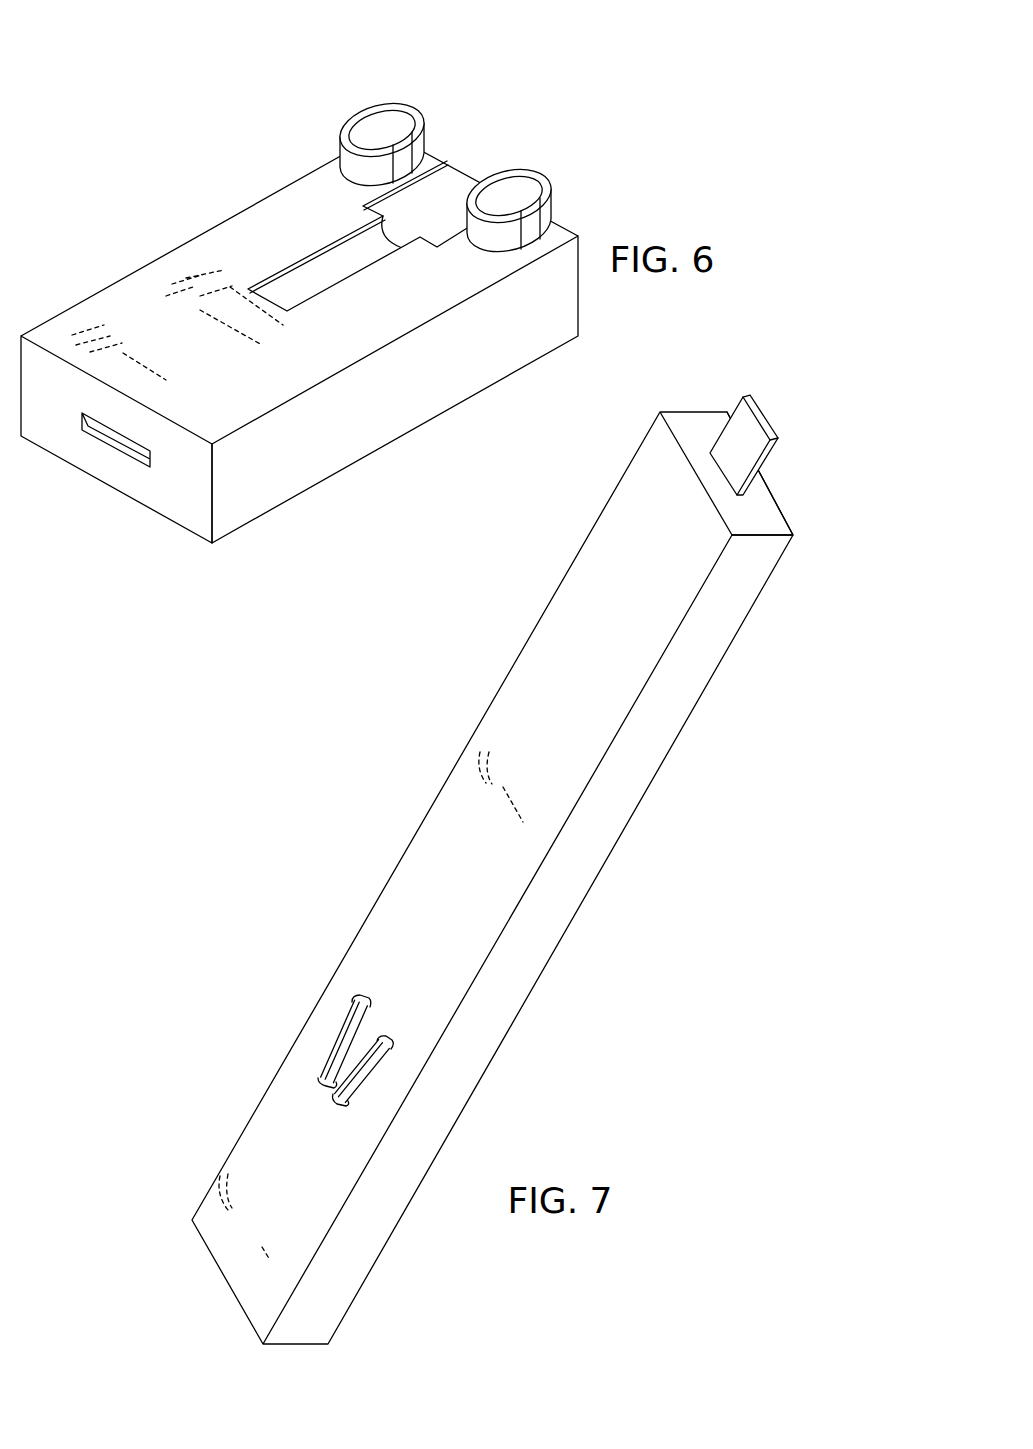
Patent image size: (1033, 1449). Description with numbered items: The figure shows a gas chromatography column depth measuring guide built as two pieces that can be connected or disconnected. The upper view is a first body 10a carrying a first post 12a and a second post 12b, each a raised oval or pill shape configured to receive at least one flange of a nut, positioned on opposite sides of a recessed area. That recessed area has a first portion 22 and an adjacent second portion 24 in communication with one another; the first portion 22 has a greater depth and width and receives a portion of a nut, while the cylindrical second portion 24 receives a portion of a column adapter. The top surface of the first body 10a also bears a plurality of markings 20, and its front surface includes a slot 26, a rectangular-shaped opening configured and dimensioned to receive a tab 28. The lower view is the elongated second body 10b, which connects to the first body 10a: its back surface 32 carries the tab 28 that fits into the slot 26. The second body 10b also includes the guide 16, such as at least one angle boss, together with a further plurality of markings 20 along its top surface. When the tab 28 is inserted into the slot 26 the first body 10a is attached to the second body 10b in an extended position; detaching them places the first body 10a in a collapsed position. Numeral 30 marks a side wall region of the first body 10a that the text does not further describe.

In FIG. 6, the first body 10a is at (108, 105).
In FIG. 7, the second body 10b is at (877, 754).
In FIG. 6, the first post 12a is at (362, 106).
In FIG. 6, the second post 12b is at (546, 177).
In FIG. 7, the guide 16 is at (322, 1077).
In FIG. 6, the markings 20 is at (83, 337).
In FIG. 7, the markings 20 is at (473, 775).
In FIG. 6, the first portion 22 is at (443, 195).
In FIG. 6, the second portion 24 is at (352, 255).
In FIG. 6, the slot 26 is at (128, 457).
In FIG. 7, the tab 28 is at (748, 396).
In FIG. 6, the side wall 30 is at (197, 518).
In FIG. 7, the back surface 32 is at (763, 503).